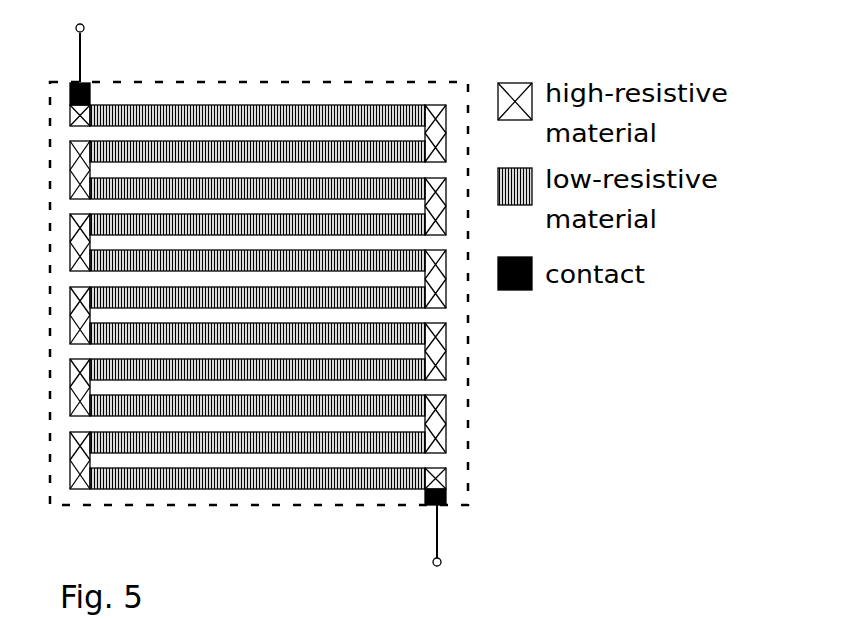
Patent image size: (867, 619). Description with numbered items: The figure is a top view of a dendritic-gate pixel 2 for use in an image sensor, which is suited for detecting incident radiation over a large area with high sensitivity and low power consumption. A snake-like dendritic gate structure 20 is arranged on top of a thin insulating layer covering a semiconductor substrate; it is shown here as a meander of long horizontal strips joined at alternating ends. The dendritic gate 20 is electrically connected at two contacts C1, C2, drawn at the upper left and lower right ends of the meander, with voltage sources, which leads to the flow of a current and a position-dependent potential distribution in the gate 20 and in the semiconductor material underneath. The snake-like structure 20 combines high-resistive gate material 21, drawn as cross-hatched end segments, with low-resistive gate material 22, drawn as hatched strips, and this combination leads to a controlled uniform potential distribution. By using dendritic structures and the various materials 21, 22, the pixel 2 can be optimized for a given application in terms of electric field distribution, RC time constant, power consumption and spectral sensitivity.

The dendritic-gate pixel 2 is at (470, 325).
The snake-like dendritic gate structure 20 is at (353, 269).
The high-resistive gate material 21 is at (437, 104).
The low-resistive gate material 22 is at (259, 120).
The contact C1 is at (107, 53).
The contact C2 is at (465, 537).